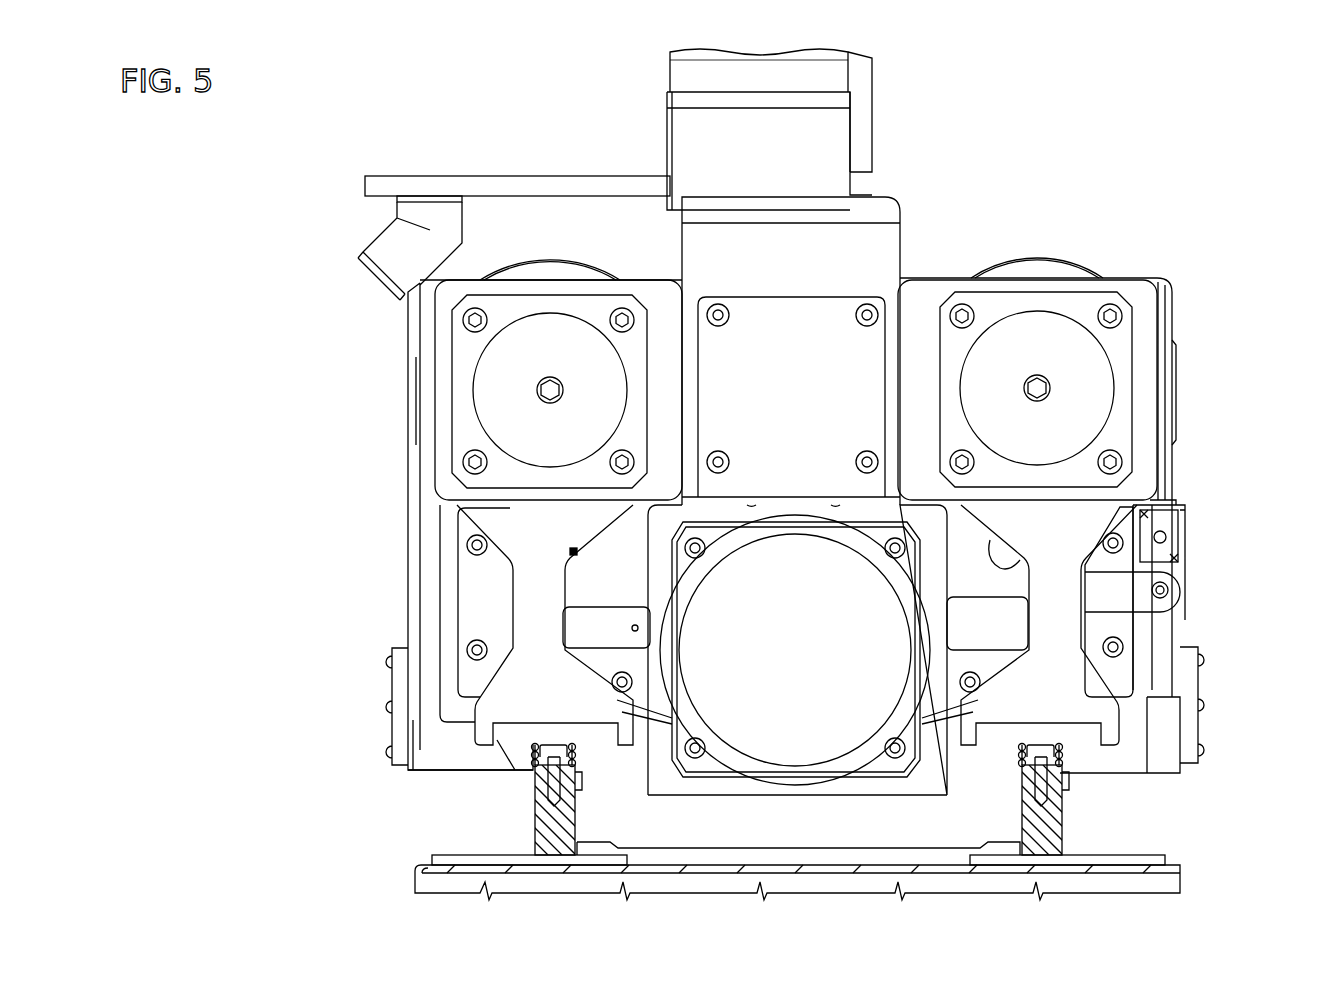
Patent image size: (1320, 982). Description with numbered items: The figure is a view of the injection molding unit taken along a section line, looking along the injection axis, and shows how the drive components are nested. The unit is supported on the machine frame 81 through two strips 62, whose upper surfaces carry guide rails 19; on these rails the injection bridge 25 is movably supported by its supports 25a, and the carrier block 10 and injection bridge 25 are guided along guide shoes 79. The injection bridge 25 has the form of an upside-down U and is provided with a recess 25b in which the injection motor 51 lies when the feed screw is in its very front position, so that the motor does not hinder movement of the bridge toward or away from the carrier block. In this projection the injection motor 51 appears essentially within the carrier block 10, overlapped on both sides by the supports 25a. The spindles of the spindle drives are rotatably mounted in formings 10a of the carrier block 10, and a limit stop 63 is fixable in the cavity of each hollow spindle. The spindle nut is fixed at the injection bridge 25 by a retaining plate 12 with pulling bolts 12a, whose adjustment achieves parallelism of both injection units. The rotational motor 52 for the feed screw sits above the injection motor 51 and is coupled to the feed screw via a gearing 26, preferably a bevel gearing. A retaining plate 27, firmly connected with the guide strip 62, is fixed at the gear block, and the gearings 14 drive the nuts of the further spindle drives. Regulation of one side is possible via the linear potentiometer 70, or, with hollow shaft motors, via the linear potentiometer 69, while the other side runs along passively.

The carrier block 10 is at (1000, 262).
The formings of the carrier block 10a is at (1060, 270).
The retaining plate 12 is at (1122, 345).
The pulling bolts 12a is at (1130, 300).
The gearings 14 is at (400, 688).
The guide rails 19 is at (572, 763).
The injection bridge 25 is at (1158, 487).
The supports of the injection bridge 25a is at (553, 715).
The recess 25b is at (1000, 570).
The gearing 26 is at (795, 148).
The retaining plate 27 is at (425, 548).
The injection motor 51 is at (760, 622).
The rotational motor 52 is at (822, 72).
The strips 62 is at (545, 823).
The limit stop 63 is at (508, 370).
The linear potentiometer 69 is at (1178, 515).
The linear potentiometer 70 is at (1182, 578).
The guide shoes 79 is at (585, 745).
The machine frame 81 is at (1140, 888).